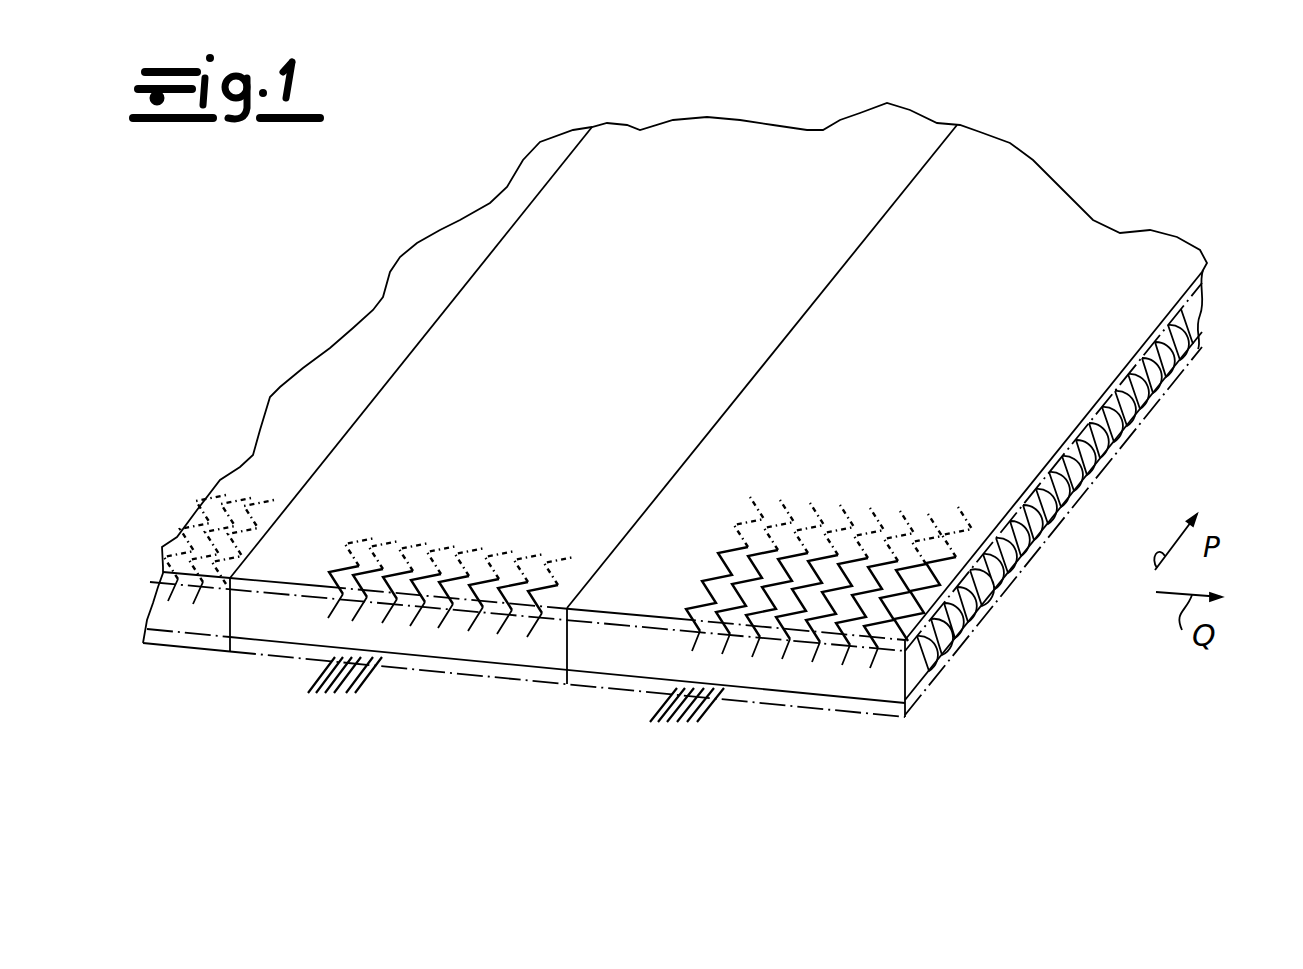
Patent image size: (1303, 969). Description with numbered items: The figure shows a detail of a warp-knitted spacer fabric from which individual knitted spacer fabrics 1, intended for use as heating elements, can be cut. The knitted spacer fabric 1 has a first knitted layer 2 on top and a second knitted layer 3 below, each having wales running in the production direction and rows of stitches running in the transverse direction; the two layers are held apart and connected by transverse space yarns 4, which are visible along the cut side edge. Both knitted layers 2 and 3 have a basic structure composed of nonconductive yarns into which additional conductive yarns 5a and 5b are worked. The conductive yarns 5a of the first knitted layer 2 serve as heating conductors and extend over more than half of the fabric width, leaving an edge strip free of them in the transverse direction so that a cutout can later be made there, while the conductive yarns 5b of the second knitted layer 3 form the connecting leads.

The knitted spacer fabric 1 is at (937, 132).
The first knitted layer 2 is at (1203, 273).
The second knitted layer 3 is at (1188, 362).
The transverse space yarns 4 is at (1197, 323).
The conductive yarns of the first knitted layer 5a is at (446, 610).
The conductive yarns of the second knitted layer 5b is at (350, 697).